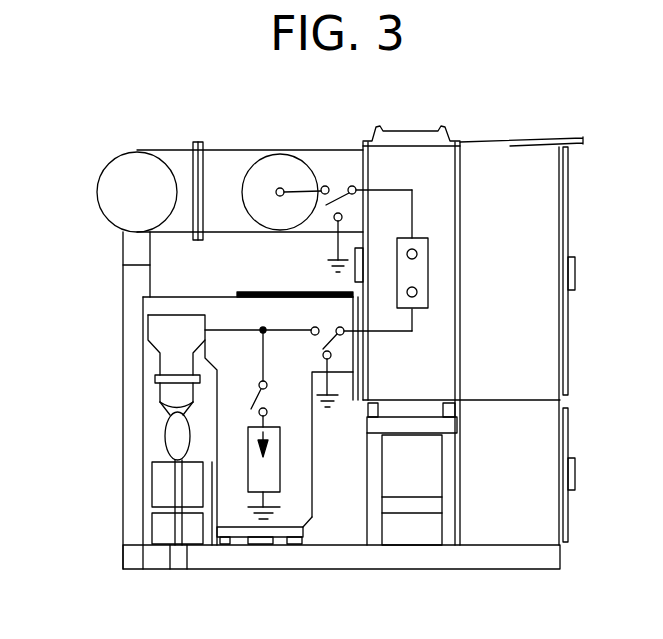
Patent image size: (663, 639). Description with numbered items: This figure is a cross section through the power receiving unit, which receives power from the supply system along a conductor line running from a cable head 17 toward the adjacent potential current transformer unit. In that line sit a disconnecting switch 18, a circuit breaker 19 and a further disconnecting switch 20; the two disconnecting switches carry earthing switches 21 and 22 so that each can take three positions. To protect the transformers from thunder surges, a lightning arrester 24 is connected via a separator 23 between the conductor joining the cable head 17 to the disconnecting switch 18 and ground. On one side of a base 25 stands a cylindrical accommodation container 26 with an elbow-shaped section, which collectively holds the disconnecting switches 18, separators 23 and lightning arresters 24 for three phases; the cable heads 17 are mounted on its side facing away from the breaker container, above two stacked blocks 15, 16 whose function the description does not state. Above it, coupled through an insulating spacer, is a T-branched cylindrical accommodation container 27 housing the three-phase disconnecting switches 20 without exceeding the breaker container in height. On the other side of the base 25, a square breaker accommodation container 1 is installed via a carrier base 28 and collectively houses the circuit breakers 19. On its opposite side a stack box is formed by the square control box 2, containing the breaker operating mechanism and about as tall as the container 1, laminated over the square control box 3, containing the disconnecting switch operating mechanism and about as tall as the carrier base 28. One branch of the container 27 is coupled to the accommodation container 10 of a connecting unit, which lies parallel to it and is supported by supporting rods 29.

The breaker accommodation container 1 is at (442, 190).
The square control box 2 is at (550, 350).
The square control box 3 is at (550, 440).
The accommodation container 10 is at (105, 190).
The lower housing block 15 is at (160, 530).
The upper housing block 16 is at (173, 488).
The cable head 17 is at (160, 329).
The disconnecting switch 18 is at (340, 343).
The circuit breaker 19 is at (428, 267).
The disconnecting switch 20 is at (338, 186).
The earthing switch 21 is at (338, 402).
The earthing switch 22 is at (327, 271).
The separator 23 is at (250, 392).
The lightning arrester 24 is at (248, 440).
The base 25 is at (502, 562).
The accommodation container 26 is at (310, 518).
The accommodation container 27 is at (200, 141).
The carrier base 28 is at (373, 538).
The supporting rod 29 is at (135, 288).